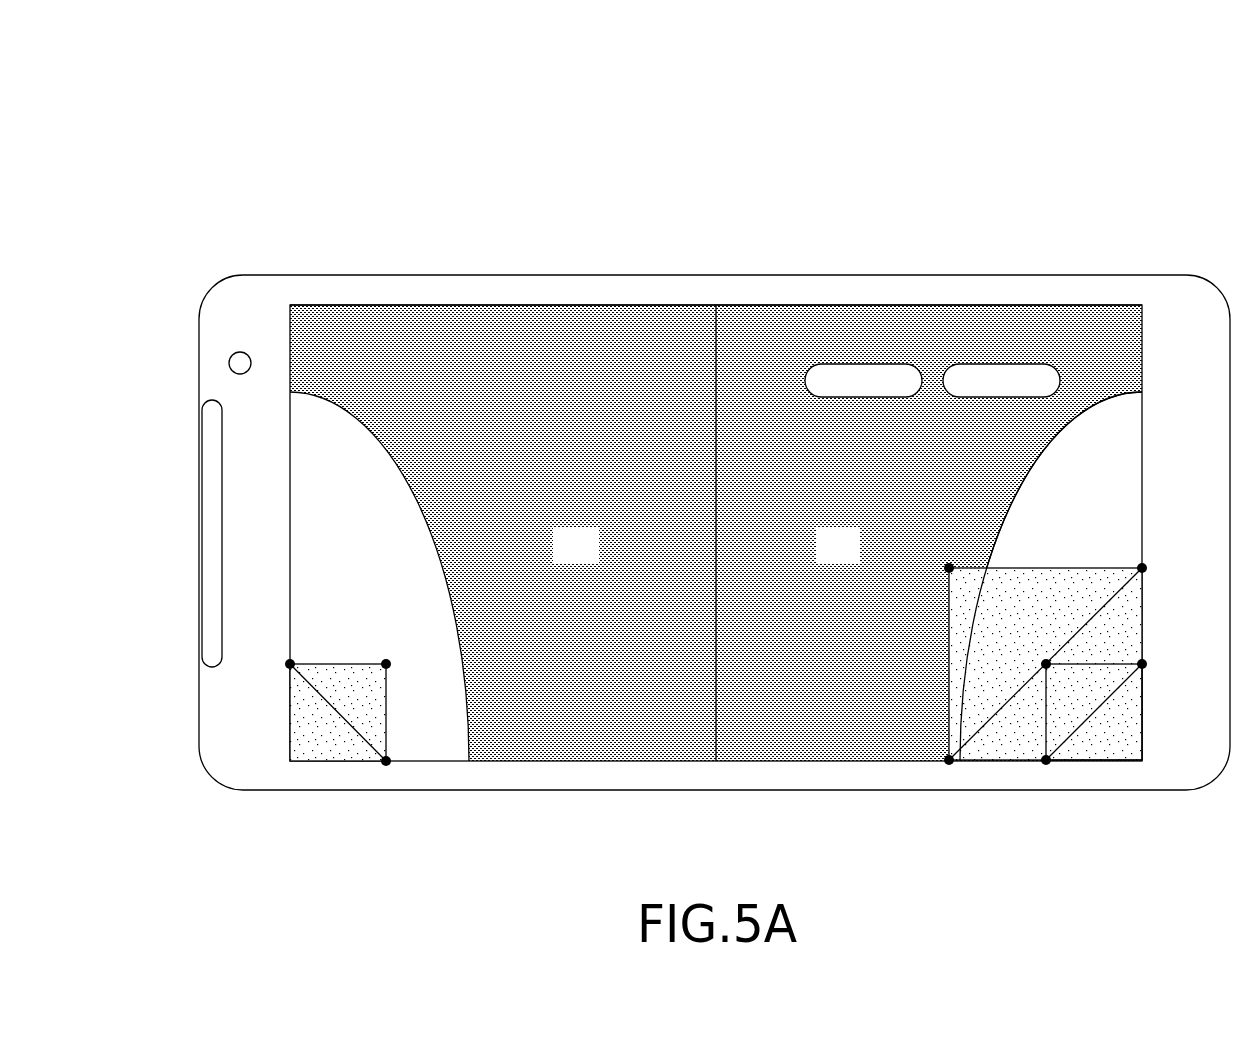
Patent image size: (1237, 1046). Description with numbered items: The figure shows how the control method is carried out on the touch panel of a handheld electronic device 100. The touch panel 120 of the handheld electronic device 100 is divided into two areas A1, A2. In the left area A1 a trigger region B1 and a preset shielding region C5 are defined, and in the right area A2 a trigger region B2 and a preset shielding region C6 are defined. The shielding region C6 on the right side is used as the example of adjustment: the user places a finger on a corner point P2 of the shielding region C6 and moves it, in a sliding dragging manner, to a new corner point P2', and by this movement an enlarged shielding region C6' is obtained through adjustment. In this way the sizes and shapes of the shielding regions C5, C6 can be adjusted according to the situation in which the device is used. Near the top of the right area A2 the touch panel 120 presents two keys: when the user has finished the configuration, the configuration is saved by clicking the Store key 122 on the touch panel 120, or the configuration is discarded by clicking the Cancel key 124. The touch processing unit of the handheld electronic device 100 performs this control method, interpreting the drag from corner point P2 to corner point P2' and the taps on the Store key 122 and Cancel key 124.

The handheld electronic device 100 is at (232, 160).
The touch panel 120 is at (468, 168).
The Store key 122 is at (1000, 356).
The Cancel key 124 is at (873, 356).
The area A1 is at (462, 299).
The area A2 is at (808, 298).
The trigger region B1 is at (576, 546).
The trigger region B2 is at (838, 546).
The preset shielding region C5 is at (321, 741).
The shielding region C6' is at (1045, 628).
The preset shielding region C6 is at (1094, 761).
The corner point P2 is at (1029, 652).
The corner point P2' is at (926, 565).